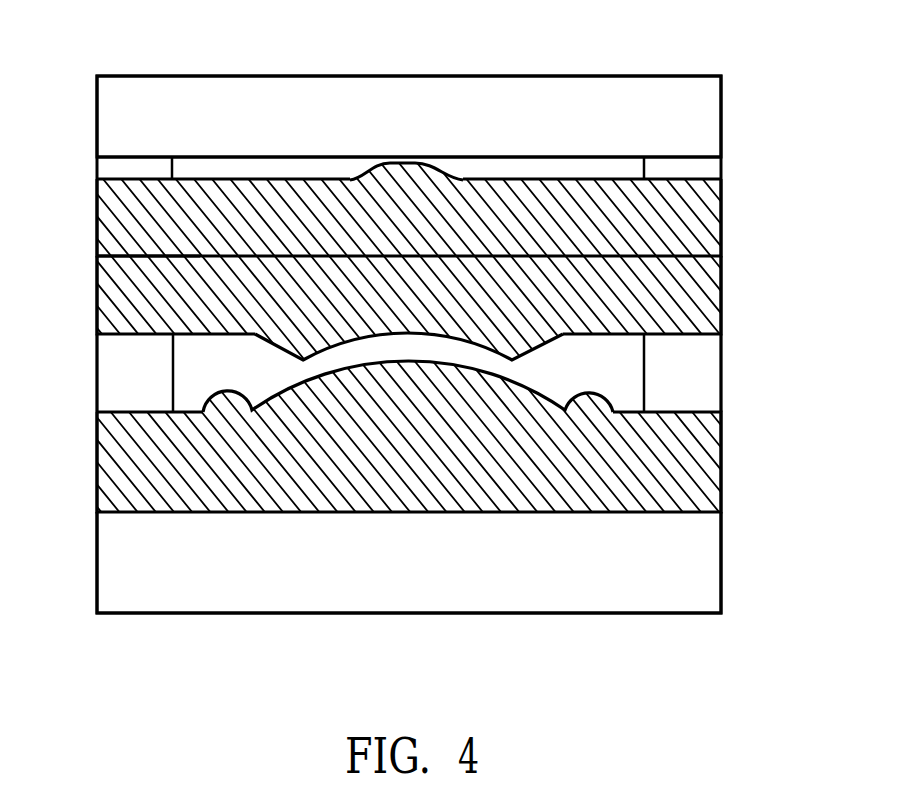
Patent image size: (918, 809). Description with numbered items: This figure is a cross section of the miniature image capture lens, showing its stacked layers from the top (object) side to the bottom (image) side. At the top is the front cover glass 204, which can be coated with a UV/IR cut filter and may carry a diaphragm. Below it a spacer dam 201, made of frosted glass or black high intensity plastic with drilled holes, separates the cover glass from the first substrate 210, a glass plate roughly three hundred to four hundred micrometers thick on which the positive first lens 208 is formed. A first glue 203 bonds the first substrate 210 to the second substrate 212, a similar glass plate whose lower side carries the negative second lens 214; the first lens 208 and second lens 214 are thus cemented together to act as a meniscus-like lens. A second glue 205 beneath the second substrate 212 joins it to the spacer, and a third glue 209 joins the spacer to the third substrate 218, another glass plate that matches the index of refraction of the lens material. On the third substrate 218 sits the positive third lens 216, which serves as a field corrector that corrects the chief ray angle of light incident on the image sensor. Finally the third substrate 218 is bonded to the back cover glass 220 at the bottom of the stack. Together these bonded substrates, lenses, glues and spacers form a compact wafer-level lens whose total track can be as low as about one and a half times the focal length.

The spacer dam 201 is at (712, 167).
The first glue 203 is at (120, 255).
The front cover glass 204 is at (712, 117).
The second glue 205 is at (130, 337).
The first lens 208 is at (374, 163).
The third glue 209 is at (133, 414).
The first substrate 210 is at (712, 215).
The second substrate 212 is at (712, 290).
The second lens 214 is at (483, 348).
The third lens 216 is at (302, 383).
The third substrate 218 is at (712, 455).
The back cover glass 220 is at (712, 554).